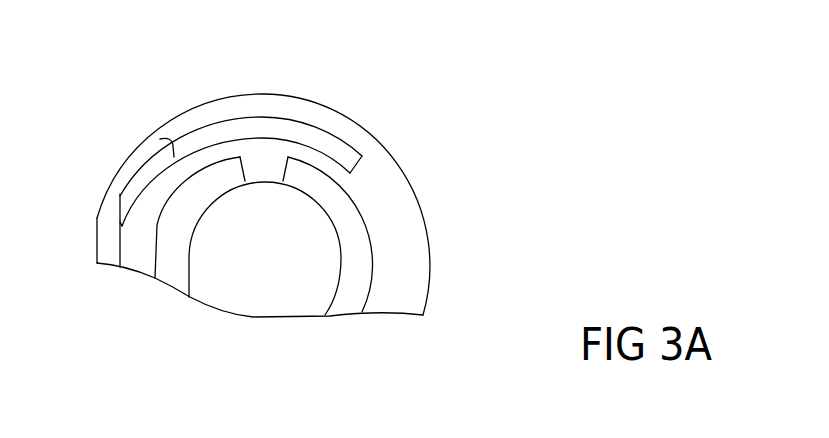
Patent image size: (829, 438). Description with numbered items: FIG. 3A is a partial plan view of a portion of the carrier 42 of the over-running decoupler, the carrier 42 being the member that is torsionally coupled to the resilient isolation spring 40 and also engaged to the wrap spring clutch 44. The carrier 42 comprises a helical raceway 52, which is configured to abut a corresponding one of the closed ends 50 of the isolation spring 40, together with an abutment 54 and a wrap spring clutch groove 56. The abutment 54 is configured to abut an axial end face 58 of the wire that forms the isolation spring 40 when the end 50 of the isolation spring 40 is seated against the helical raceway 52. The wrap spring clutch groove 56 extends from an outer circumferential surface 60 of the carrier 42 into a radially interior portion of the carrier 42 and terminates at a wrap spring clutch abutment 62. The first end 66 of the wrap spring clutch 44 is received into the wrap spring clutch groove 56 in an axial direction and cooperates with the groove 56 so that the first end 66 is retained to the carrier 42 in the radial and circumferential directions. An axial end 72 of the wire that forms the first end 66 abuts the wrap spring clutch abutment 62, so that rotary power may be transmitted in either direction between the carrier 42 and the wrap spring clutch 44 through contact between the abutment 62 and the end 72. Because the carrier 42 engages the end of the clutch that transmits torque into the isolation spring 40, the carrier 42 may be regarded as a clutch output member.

The carrier 42 is at (428, 206).
The isolation spring 40 is at (170, 232).
The wrap spring clutch 44 is at (173, 141).
The closed end 50 is at (192, 206).
The helical raceway 52 is at (350, 297).
The abutment 54 is at (268, 172).
The wrap spring clutch groove 56 is at (307, 123).
The axial end face 58 is at (248, 184).
The outer circumferential surface 60 is at (431, 262).
The wrap spring clutch abutment 62 is at (367, 186).
The first end 66 is at (247, 127).
The axial end 72 is at (360, 158).